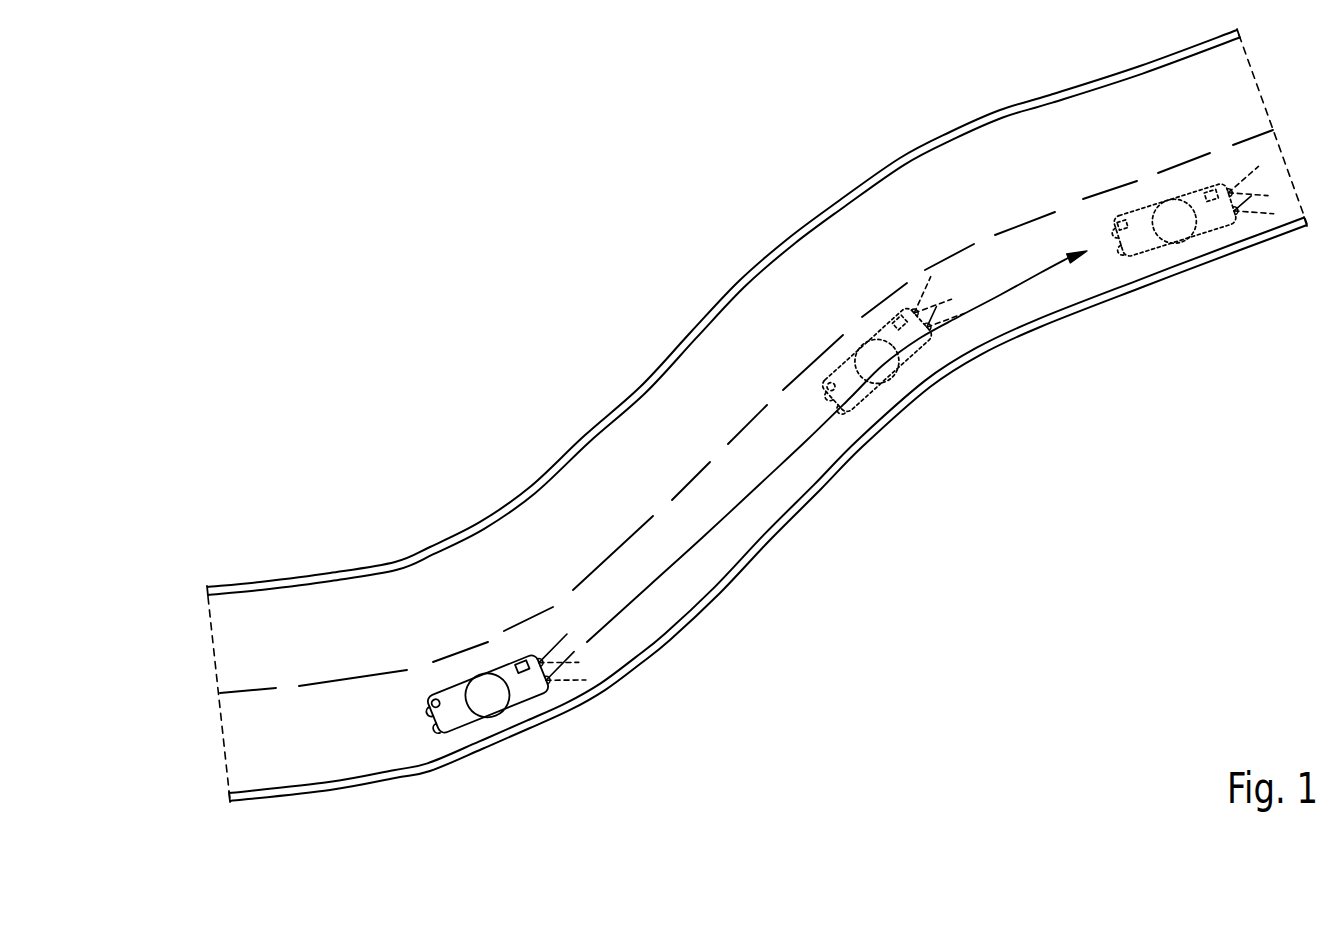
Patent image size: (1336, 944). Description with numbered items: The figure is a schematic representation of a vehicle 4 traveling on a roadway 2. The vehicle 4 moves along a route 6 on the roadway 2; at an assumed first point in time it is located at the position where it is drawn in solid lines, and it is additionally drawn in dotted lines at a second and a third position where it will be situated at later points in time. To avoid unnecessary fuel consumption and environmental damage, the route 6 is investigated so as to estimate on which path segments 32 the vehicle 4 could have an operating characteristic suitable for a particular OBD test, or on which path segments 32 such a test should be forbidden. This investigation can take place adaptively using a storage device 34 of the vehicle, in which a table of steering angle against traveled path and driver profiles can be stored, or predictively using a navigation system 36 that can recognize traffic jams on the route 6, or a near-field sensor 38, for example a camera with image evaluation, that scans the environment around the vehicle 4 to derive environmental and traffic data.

The roadway 2 is at (492, 540).
The vehicle 4 is at (463, 733).
The route 6 is at (703, 537).
The path segments 32 is at (940, 340).
The storage device 34 is at (520, 661).
The navigation system 36 is at (432, 702).
The near-field sensor 38 is at (548, 690).